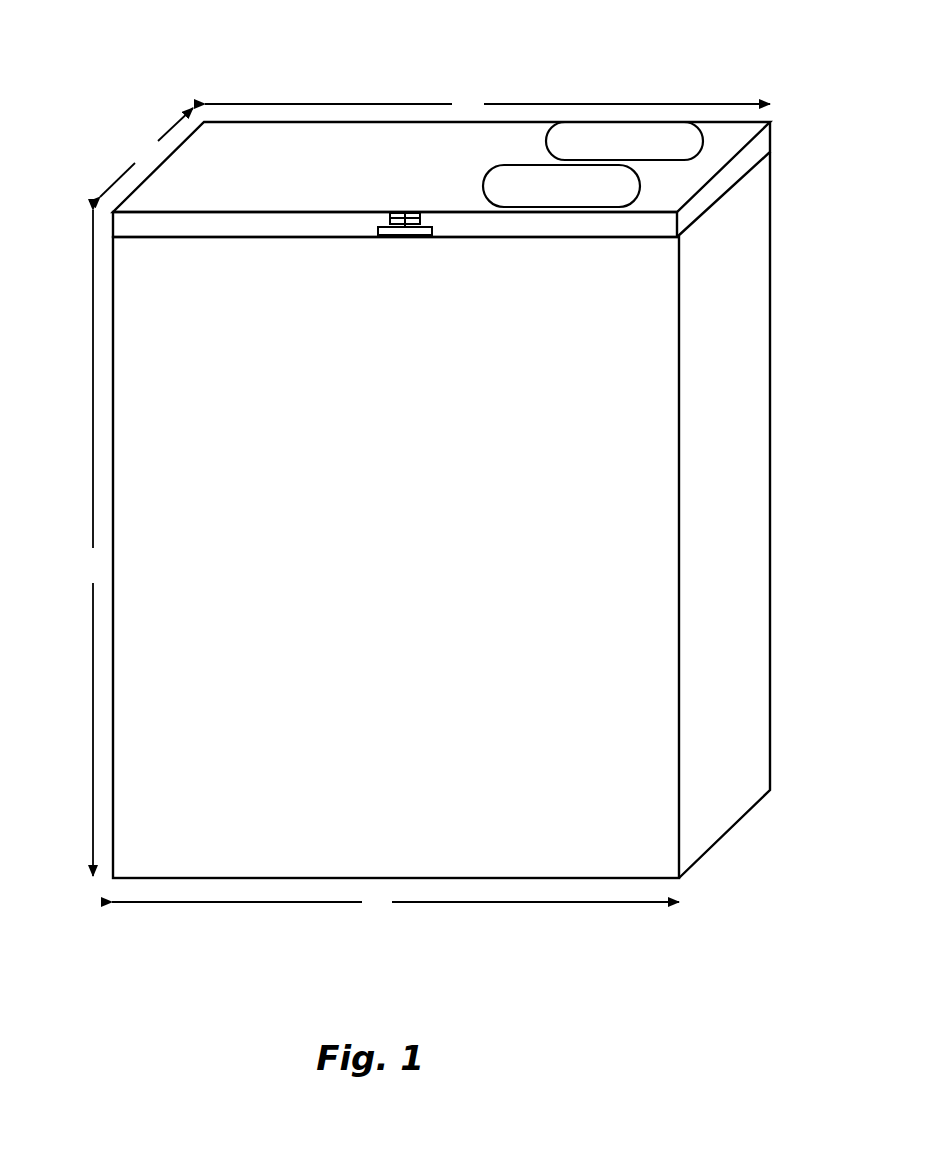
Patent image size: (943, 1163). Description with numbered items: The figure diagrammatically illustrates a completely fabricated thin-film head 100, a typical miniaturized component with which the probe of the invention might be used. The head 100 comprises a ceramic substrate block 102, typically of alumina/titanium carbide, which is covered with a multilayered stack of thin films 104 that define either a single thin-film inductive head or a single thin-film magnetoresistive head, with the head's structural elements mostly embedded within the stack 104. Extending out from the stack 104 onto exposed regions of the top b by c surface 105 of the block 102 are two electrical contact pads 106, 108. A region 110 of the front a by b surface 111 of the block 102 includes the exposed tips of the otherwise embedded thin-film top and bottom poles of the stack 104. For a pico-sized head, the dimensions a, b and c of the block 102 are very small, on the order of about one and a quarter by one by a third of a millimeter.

The thin-film head 100 is at (500, 29).
The ceramic substrate block 102 is at (760, 268).
The multilayered stack of thin films 104 is at (767, 138).
The top b x c surface 105 is at (441, 167).
The electrical contact pad 106 is at (546, 134).
The electrical contact pad 108 is at (484, 190).
The region 110 is at (366, 225).
The front a x b surface 111 is at (396, 557).